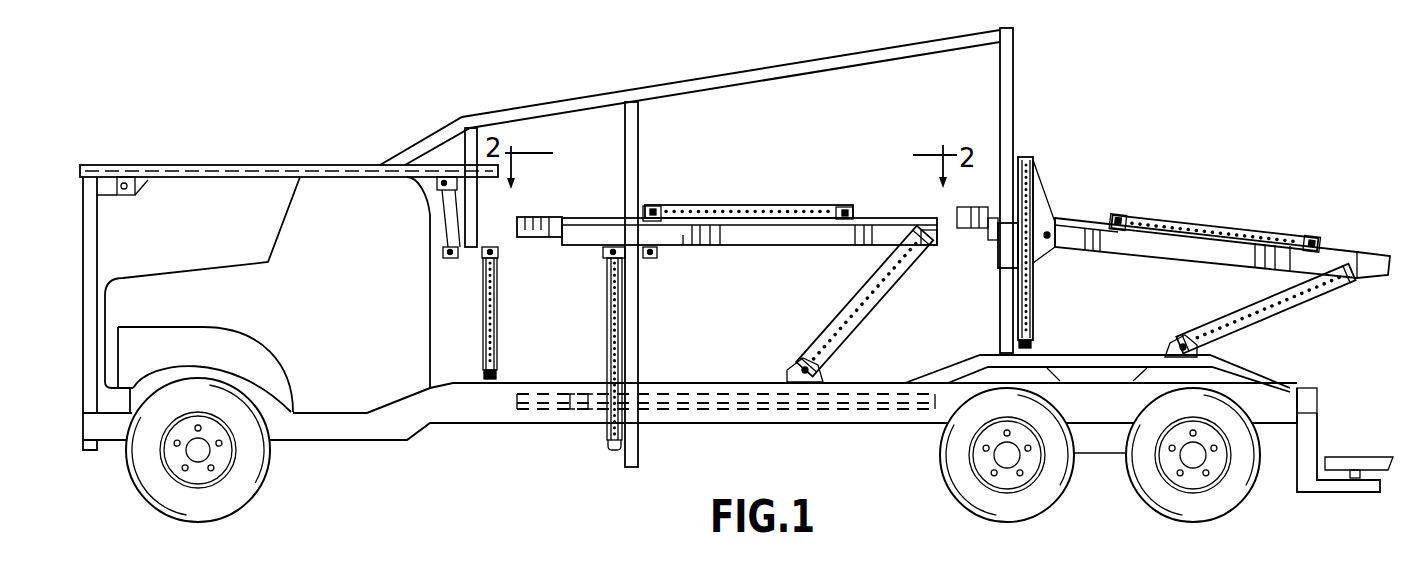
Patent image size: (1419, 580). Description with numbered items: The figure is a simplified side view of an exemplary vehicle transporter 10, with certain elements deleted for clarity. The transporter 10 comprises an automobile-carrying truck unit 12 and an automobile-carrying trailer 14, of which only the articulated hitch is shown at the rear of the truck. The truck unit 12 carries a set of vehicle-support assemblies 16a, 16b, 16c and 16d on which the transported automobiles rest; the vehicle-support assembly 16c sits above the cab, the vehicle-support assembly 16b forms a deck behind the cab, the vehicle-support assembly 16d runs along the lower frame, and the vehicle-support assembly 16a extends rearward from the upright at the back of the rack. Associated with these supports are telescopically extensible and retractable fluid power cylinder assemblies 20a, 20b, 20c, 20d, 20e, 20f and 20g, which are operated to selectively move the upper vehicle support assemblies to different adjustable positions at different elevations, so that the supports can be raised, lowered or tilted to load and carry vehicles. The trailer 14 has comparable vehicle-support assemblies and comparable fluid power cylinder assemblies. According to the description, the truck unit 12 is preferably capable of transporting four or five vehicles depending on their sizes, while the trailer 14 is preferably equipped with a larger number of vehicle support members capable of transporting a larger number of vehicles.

The vehicle transporter 10 is at (1192, 120).
The truck unit 12 is at (366, 317).
The trailer 14 is at (1363, 457).
The vehicle-support assembly 16a is at (1082, 218).
The vehicle-support assembly 16b is at (880, 216).
The vehicle-support assembly 16c is at (252, 163).
The vehicle-support assembly 16d is at (730, 392).
The fluid power cylinder assembly 20a is at (1242, 308).
The fluid power cylinder assembly 20b is at (1037, 302).
The fluid power cylinder assembly 20c is at (858, 298).
The fluid power cylinder assembly 20d is at (607, 333).
The fluid power cylinder assembly 20e is at (505, 289).
The fluid power cylinder assembly 20f is at (1262, 227).
The fluid power cylinder assembly 20g is at (808, 204).